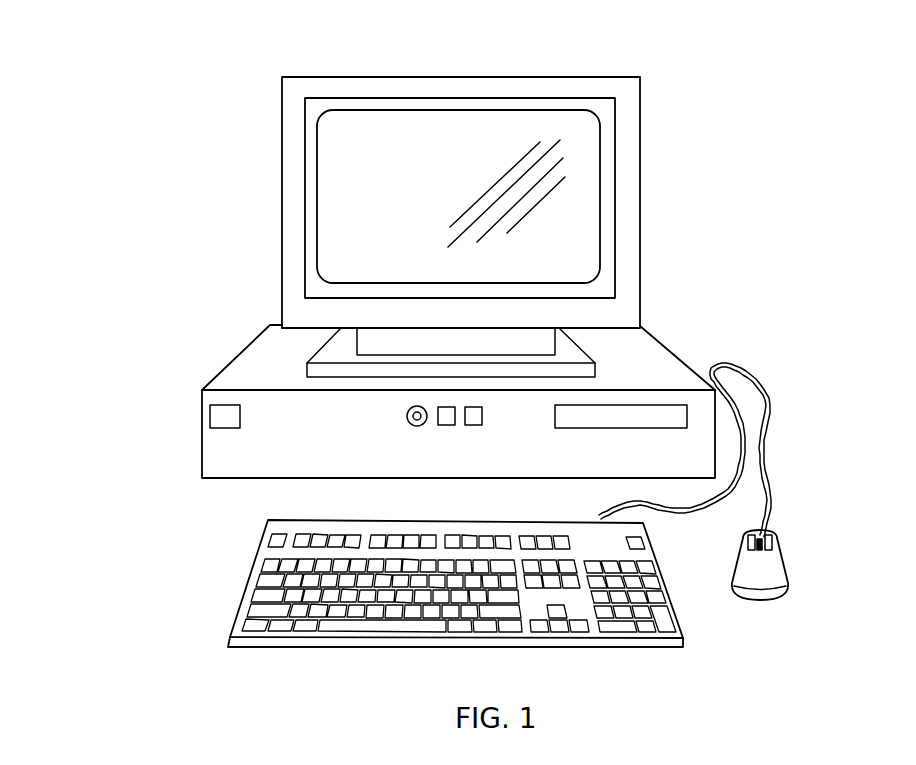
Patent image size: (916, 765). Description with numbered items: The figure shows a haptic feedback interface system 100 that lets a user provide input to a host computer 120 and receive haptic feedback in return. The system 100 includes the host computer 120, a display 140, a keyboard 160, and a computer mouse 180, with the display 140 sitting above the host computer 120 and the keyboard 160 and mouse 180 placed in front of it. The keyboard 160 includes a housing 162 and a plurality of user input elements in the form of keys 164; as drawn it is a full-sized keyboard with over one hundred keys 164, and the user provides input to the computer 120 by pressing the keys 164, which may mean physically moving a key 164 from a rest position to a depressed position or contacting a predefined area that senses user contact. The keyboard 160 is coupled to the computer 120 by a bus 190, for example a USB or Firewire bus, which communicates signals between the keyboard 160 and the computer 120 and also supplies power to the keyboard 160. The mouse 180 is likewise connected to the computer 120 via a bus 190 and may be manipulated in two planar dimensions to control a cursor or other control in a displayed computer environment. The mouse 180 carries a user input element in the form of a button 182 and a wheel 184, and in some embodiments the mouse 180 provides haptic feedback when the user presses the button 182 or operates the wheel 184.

The haptic feedback interface system 100 is at (114, 128).
The host computer 120 is at (230, 363).
The display 140 is at (623, 75).
The keyboard 160 is at (246, 592).
The housing 162 is at (262, 550).
The keys 164 is at (357, 535).
The computer mouse 180 is at (778, 536).
The button 182 is at (748, 540).
The wheel 184 is at (760, 549).
The bus 190 is at (771, 398).